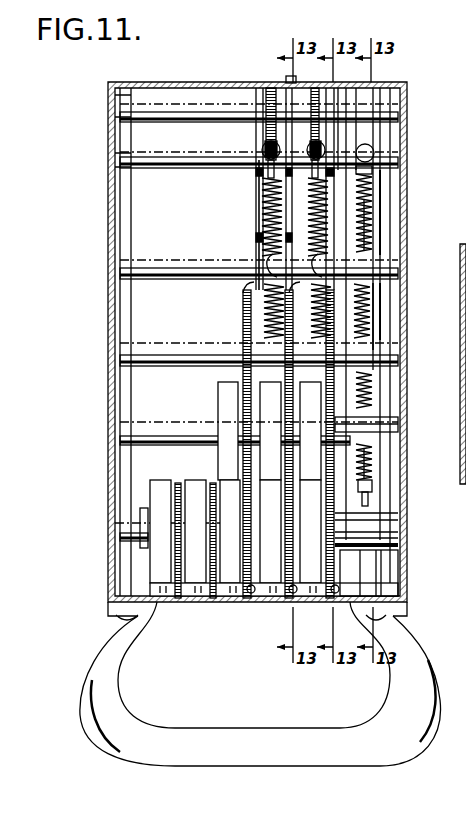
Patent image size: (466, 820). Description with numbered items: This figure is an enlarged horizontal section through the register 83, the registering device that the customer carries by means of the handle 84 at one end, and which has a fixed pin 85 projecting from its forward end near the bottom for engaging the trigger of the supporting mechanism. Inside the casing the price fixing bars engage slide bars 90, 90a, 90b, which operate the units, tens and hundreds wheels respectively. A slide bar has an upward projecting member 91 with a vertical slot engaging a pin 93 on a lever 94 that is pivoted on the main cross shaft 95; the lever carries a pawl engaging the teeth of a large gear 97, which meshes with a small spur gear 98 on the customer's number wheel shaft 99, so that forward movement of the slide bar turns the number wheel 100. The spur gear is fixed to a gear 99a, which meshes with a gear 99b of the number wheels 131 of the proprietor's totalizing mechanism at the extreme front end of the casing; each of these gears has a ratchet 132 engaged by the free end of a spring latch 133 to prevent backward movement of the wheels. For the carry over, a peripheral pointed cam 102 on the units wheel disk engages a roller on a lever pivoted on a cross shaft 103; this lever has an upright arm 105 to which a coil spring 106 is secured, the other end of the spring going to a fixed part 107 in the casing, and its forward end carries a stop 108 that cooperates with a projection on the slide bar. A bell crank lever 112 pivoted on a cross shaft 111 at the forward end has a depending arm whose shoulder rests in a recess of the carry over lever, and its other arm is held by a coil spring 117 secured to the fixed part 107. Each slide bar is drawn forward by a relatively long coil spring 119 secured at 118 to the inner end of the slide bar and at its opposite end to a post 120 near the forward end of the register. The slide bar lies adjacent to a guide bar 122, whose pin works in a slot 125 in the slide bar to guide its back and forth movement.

The register 83 is at (107, 313).
The handle 84 is at (93, 664).
The fixed pin 85 is at (286, 78).
The slide bar 90 is at (383, 196).
The slide bar 90a is at (378, 179).
The slide bar 90b is at (262, 185).
The upward projecting member 91 is at (370, 326).
The pin 93 is at (373, 306).
The lever 94 is at (399, 356).
The main cross shaft 95 is at (372, 346).
The large gear 97 is at (243, 309).
The small spur gear 98 is at (372, 450).
The customer's number wheel shaft 99 is at (372, 425).
The gear 99a is at (372, 484).
The gear 99b is at (372, 533).
The number wheel 100 is at (231, 380).
The peripheral pointed cam 102 is at (360, 395).
The cross shaft 103 is at (372, 258).
The upright arm 105 is at (265, 252).
The coil spring 106 is at (315, 228).
The fixed part 107 is at (392, 163).
The stop 108 is at (328, 115).
The cross shaft 111 is at (372, 106).
The bell crank lever 112 is at (276, 112).
The coil spring 117 is at (264, 165).
The securing point 118 is at (370, 496).
The coil spring 119 is at (366, 214).
The post 120 is at (264, 150).
The guide bar 122 is at (360, 516).
The slot 125 is at (360, 228).
The number wheels 131 is at (227, 577).
The ratchet 132 is at (372, 545).
The spring latch 133 is at (372, 560).